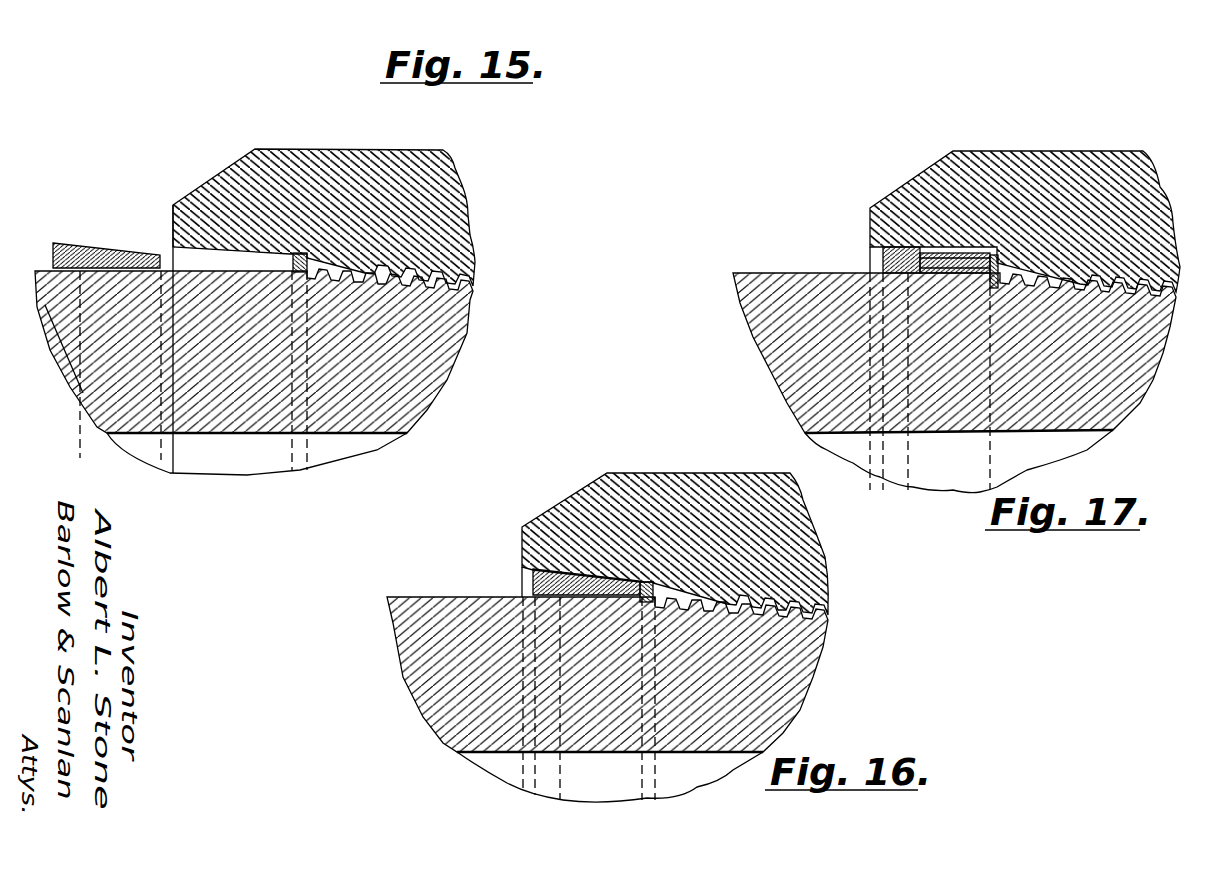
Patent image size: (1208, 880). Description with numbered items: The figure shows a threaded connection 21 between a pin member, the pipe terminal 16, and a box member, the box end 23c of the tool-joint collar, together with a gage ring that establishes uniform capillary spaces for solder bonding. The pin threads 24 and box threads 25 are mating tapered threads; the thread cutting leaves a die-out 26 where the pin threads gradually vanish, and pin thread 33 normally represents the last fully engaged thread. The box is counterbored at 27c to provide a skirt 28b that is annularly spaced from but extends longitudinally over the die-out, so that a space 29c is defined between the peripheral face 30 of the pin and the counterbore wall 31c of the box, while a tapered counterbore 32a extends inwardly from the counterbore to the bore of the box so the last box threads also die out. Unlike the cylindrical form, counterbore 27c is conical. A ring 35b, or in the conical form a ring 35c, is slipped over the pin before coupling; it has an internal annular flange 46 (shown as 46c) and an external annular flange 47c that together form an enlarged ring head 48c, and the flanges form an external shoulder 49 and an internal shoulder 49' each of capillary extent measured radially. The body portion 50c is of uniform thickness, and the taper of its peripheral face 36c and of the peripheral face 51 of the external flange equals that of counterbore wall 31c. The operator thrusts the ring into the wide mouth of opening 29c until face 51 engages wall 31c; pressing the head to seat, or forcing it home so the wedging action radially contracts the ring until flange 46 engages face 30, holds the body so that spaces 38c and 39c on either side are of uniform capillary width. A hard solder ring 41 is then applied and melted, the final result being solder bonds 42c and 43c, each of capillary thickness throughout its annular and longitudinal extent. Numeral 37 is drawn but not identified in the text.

In FIG. 15, the pipe terminal 16 is at (365, 413).
In FIG. 16, the pipe terminal 16 is at (700, 737).
In FIG. 17, the pipe terminal 16 is at (1050, 417).
In FIG. 16, the connection 21 is at (786, 594).
In FIG. 15, the box end 23c is at (423, 163).
In FIG. 16, the box end 23c is at (790, 503).
In FIG. 17, the box end 23c is at (1081, 160).
In FIG. 15, the pin threads 24 is at (460, 287).
In FIG. 16, the pin threads 24 is at (810, 610).
In FIG. 17, the pin threads 24 is at (1160, 292).
In FIG. 15, the box threads 25 is at (450, 284).
In FIG. 16, the box threads 25 is at (802, 607).
In FIG. 17, the box threads 25 is at (1142, 283).
In FIG. 15, the die-out of pin threads 26 is at (222, 273).
In FIG. 15, the counterbore 27c is at (318, 268).
In FIG. 16, the skirt 28b is at (578, 513).
In FIG. 17, the skirt 28b is at (920, 185).
In FIG. 15, the space 29c is at (185, 250).
In FIG. 16, the space 29c is at (522, 583).
In FIG. 15, the peripheral face 30 is at (222, 273).
In FIG. 16, the peripheral face 30 is at (522, 590).
In FIG. 17, the peripheral face 30 is at (870, 265).
In FIG. 15, the counterbore wall 31c is at (242, 252).
In FIG. 16, the counterbore wall 31c is at (522, 570).
In FIG. 15, the tapered counterbore 32a is at (367, 271).
In FIG. 16, the tapered counterbore 32a is at (670, 592).
In FIG. 17, the tapered counterbore 32a is at (1000, 268).
In FIG. 15, the pin thread 33 is at (437, 283).
In FIG. 16, the pin thread 33 is at (788, 612).
In FIG. 17, the pin thread 33 is at (1130, 293).
In FIG. 15, the ring 35b is at (77, 397).
In FIG. 16, the ring 35c is at (548, 605).
In FIG. 17, the ring 35c is at (920, 253).
In FIG. 15, the peripheral face 36c is at (137, 262).
In FIG. 15, the edge 37 is at (80, 300).
In FIG. 16, the space 38c is at (592, 573).
In FIG. 16, the space 39c is at (590, 600).
In FIG. 15, the hard solder ring 41 is at (298, 262).
In FIG. 16, the hard solder ring 41 is at (647, 580).
In FIG. 17, the solder bond 42c is at (963, 257).
In FIG. 17, the solder bond 43c is at (950, 275).
In FIG. 15, the internal annular flange 46 is at (45, 305).
In FIG. 16, the internal annular flange 46c is at (548, 600).
In FIG. 15, the external annular flange 47c is at (67, 243).
In FIG. 15, the ring head 48c is at (52, 260).
In FIG. 16, the ring head 48c is at (543, 568).
In FIG. 17, the ring head 48c is at (877, 250).
In FIG. 15, the external shoulder 49 is at (109, 209).
In FIG. 15, the internal shoulder 49' is at (80, 334).
In FIG. 15, the body portion 50c is at (130, 258).
In FIG. 16, the body portion 50c is at (645, 577).
In FIG. 17, the body portion 50c is at (926, 257).
In FIG. 15, the peripheral face 51 is at (68, 246).